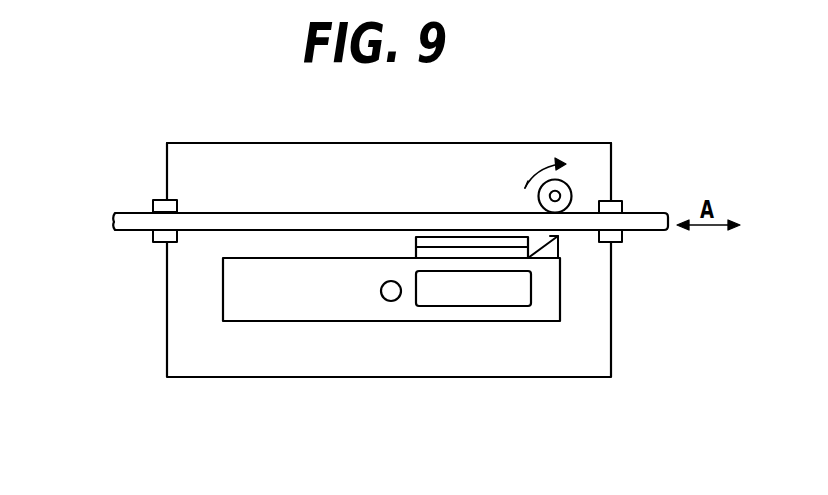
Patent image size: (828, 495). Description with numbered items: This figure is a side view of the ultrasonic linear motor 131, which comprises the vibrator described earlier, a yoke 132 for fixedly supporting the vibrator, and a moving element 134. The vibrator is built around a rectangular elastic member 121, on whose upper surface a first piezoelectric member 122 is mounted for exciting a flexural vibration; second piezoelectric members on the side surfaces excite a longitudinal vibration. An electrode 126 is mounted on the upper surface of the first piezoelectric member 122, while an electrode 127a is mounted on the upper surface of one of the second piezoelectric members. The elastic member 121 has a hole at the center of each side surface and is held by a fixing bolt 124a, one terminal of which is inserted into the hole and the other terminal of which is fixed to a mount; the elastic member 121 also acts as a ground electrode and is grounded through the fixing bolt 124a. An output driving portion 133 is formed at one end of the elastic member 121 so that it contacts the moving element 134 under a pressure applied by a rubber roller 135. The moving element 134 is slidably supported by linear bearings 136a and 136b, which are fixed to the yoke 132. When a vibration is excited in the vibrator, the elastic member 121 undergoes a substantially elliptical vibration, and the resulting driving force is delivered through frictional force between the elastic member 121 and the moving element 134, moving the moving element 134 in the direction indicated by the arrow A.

The elastic member 121 is at (550, 298).
The first piezoelectric member 122 is at (466, 254).
The fixing bolt 124a is at (391, 291).
The electrode 126 is at (432, 242).
The electrode 127a is at (479, 292).
The ultrasonic linear motor 131 is at (293, 383).
The yoke 132 is at (521, 143).
The output driving portion 133 is at (551, 250).
The moving element 134 is at (656, 233).
The rubber roller 135 is at (568, 183).
The linear bearing 136a is at (618, 201).
The linear bearing 136b is at (160, 198).